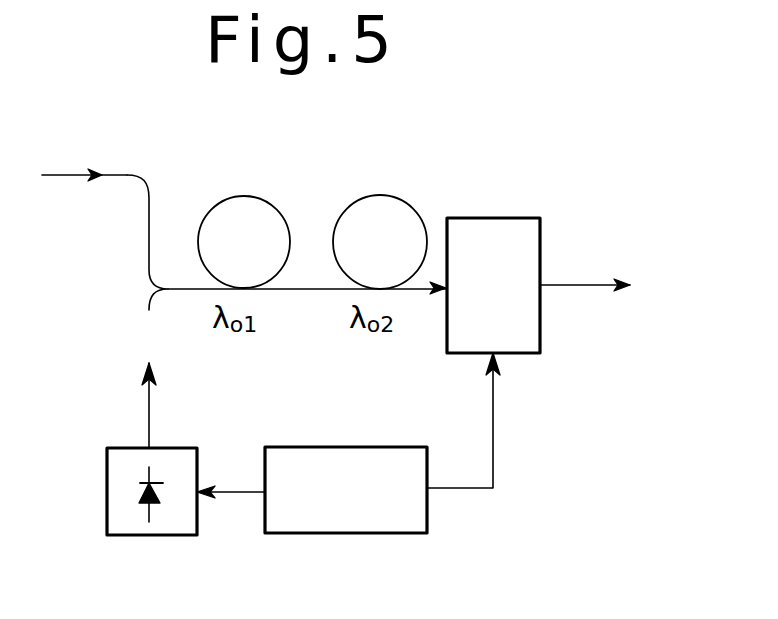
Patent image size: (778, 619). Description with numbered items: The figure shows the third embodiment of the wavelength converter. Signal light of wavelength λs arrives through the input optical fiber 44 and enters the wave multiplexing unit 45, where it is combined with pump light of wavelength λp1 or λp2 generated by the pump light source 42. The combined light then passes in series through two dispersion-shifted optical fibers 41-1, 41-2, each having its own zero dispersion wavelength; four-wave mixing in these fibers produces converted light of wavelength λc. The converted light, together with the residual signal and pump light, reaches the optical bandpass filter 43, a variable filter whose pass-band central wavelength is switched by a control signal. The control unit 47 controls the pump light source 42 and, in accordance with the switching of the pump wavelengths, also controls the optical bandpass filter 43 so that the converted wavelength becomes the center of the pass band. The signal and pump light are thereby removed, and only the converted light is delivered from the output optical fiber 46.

The input optical fiber 44 is at (70, 177).
The wave multiplexing unit 45 is at (155, 288).
The dispersion-shifted optical fiber 41-1 is at (284, 268).
The dispersion-shifted optical fiber 41-2 is at (420, 268).
The optical bandpass filter 43 is at (518, 216).
The output optical fiber 46 is at (577, 287).
The pump light source 42 is at (187, 537).
The control unit 47 is at (390, 535).